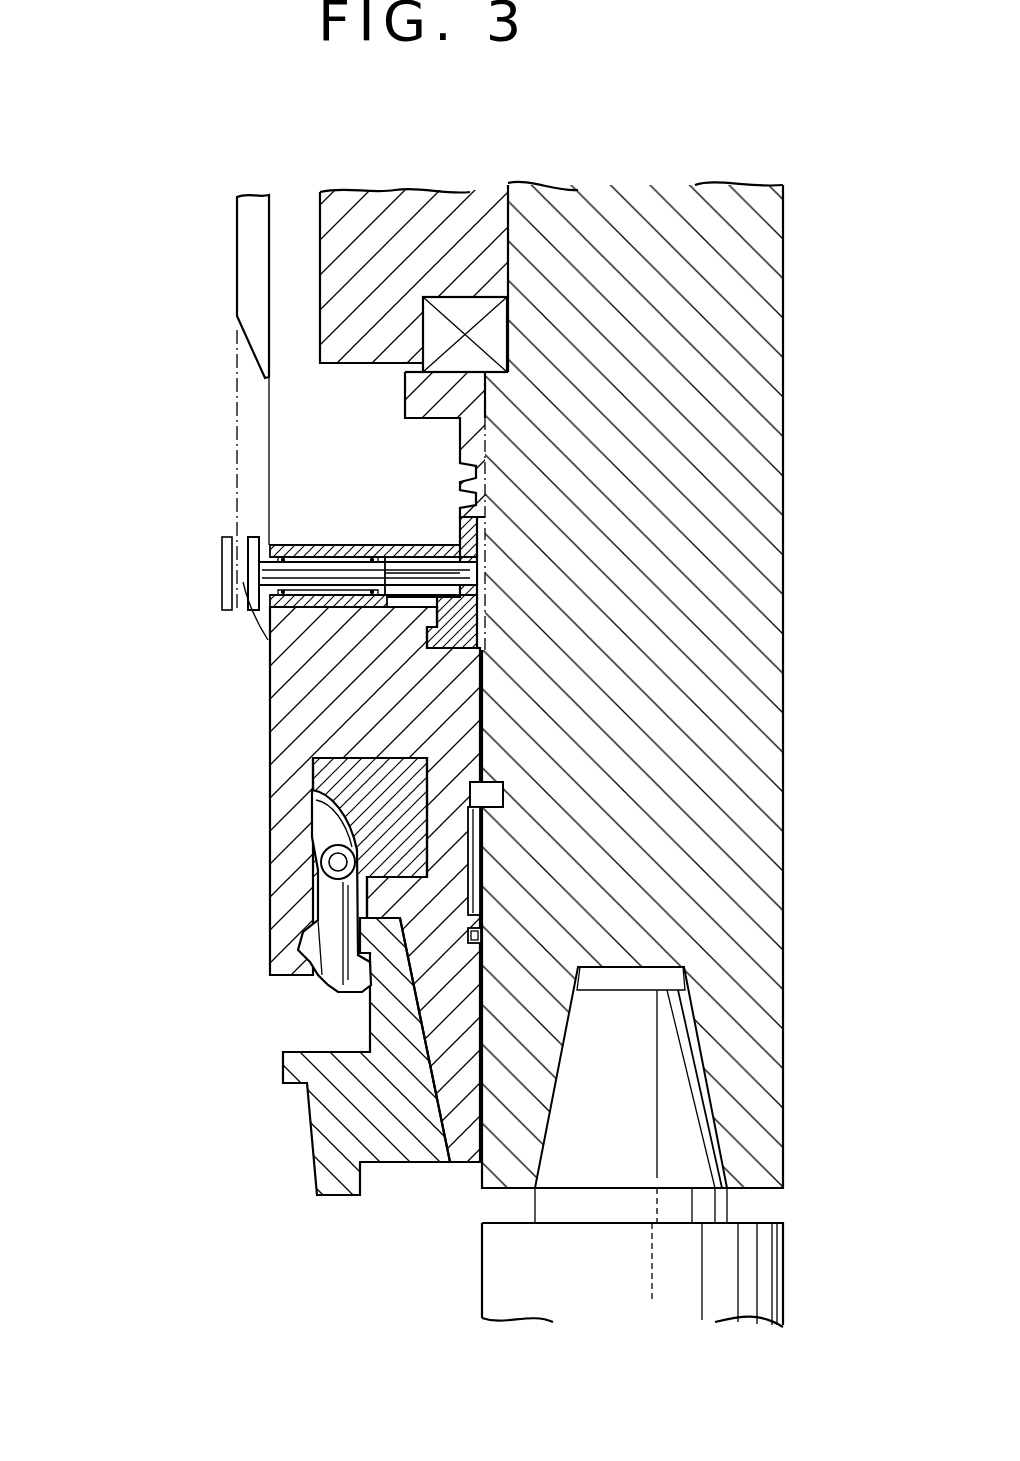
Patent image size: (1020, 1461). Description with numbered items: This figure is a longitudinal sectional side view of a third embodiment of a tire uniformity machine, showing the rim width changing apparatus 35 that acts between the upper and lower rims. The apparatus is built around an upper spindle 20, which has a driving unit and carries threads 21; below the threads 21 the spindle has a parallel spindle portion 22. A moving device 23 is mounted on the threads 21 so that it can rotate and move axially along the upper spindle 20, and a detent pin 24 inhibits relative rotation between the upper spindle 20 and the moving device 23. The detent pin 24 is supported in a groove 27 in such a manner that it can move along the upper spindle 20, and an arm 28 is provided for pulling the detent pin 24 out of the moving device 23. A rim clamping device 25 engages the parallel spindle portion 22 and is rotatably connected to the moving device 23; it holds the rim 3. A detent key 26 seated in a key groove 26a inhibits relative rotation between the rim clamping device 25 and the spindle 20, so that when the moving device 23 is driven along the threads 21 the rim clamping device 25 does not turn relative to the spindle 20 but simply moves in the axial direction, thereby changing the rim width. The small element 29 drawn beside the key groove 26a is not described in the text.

The rim 3 is at (290, 1060).
The upper spindle 20 is at (765, 600).
The threads 21 is at (462, 448).
The parallel spindle portion 22 is at (492, 693).
The moving device 23 is at (315, 548).
The detent pin 24 is at (248, 562).
The rim clamping device 25 is at (290, 888).
The detent key 26 is at (500, 793).
The key groove 26a is at (480, 850).
The groove 27 is at (467, 515).
The arm 28 is at (243, 262).
The ball 29 is at (482, 936).
The rim width changing apparatus 35 is at (122, 1161).